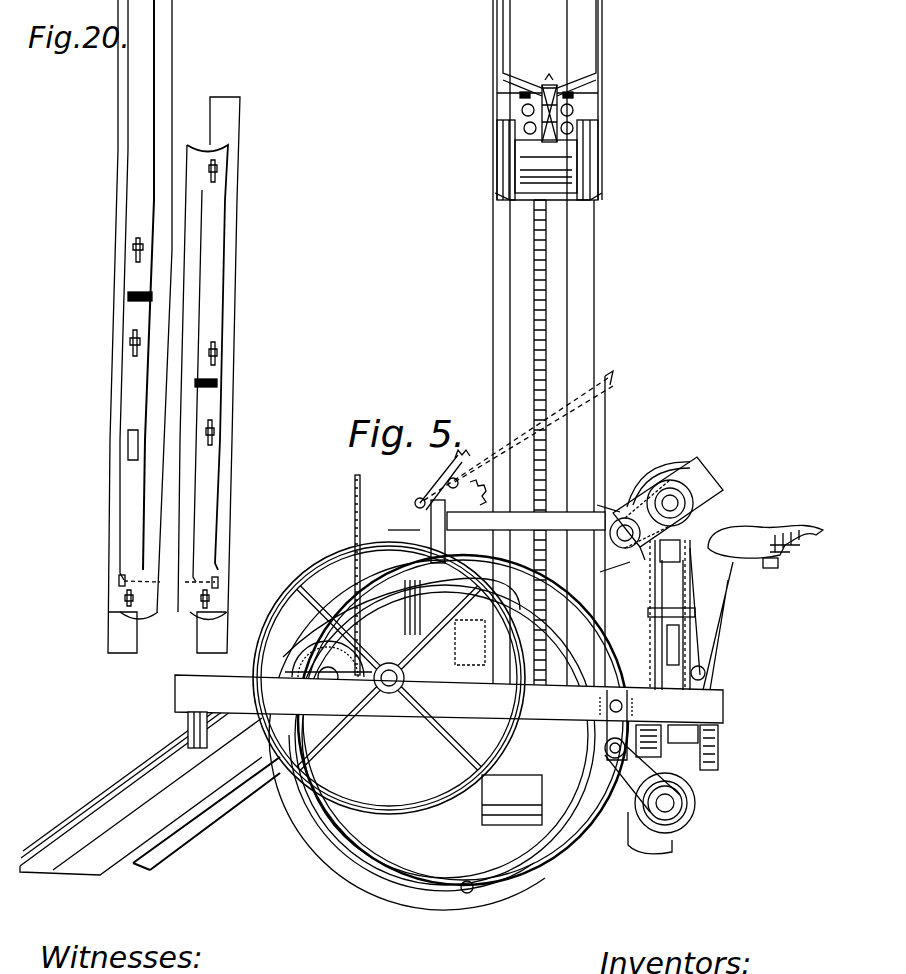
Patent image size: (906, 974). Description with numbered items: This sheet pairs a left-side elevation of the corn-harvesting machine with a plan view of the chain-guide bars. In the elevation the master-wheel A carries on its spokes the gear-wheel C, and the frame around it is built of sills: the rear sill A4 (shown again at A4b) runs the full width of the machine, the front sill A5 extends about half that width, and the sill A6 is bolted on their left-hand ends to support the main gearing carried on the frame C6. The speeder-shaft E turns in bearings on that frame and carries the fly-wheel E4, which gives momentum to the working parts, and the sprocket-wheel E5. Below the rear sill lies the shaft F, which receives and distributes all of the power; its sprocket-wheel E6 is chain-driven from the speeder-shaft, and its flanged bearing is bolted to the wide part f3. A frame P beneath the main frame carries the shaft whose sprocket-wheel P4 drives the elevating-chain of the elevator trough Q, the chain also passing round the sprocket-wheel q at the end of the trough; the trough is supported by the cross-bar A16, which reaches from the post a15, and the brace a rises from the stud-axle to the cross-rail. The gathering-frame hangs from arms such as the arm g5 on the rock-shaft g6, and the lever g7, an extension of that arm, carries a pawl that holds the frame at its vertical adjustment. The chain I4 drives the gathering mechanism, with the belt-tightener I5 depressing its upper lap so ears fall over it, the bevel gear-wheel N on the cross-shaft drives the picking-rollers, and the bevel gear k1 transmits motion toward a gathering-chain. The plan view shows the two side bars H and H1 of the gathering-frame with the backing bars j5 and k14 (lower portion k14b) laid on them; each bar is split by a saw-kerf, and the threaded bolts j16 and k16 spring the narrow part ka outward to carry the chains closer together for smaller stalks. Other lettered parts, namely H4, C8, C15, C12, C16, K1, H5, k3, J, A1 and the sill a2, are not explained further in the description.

In FIG. 20, the side bar H1 is at (140, 326).
In FIG. 20, the chain-backing bar k14 is at (138, 199).
In FIG. 20, the narrow part of bar ka is at (160, 197).
In FIG. 20, the threaded bolt k16 is at (128, 296).
In FIG. 20, the pin k14 lower k14b is at (140, 440).
In FIG. 20, the left-hand bar H is at (200, 124).
In FIG. 20, the flat bar j5 is at (200, 225).
In FIG. 20, the threaded bolt j16 is at (217, 383).
In FIG. 5, the elevator trough Q is at (553, 345).
In FIG. 5, the sprocket-wheel q is at (553, 82).
In FIG. 5, the belt-tightener I5 is at (521, 530).
In FIG. 5, the shaft F is at (672, 806).
In FIG. 5, the cross-bar A16 is at (526, 521).
In FIG. 5, the graduated post H4 is at (360, 503).
In FIG. 5, the arm g5 is at (415, 500).
In FIG. 5, the lever g7 is at (455, 458).
In FIG. 5, the rock-shaft g6 is at (477, 493).
In FIG. 5, the sill A4 is at (394, 520).
In FIG. 5, the gear-wheel C is at (401, 617).
In FIG. 5, the sprocket-wheel E5 is at (401, 617).
In FIG. 5, the gear C8 is at (328, 664).
In FIG. 5, the master-wheel A is at (449, 764).
In FIG. 5, the sill A6 is at (583, 703).
In FIG. 5, the frame C6 is at (232, 697).
In FIG. 5, the part C15 is at (278, 691).
In FIG. 5, the part C12 is at (346, 691).
In FIG. 5, the part C16 is at (428, 691).
In FIG. 5, the sill A5 is at (188, 724).
In FIG. 5, the rails K' K1 is at (150, 787).
In FIG. 5, the speeder-shaft E is at (389, 678).
In FIG. 5, the fly-wheel E4 is at (389, 683).
In FIG. 5, the sprocket-wheel P4 is at (512, 800).
In FIG. 5, the bevel gear k1 is at (470, 642).
In FIG. 5, the bevel gear-wheel N is at (651, 505).
In FIG. 5, the plate H H5 is at (705, 468).
In FIG. 5, the post a15 is at (603, 502).
In FIG. 5, the chain I4 is at (615, 573).
In FIG. 5, the sill a2 is at (680, 555).
In FIG. 5, the wide part f3 is at (648, 612).
In FIG. 5, the brace a is at (679, 640).
In FIG. 5, the sprocket-wheel E6 is at (650, 761).
In FIG. 5, the frame P is at (620, 832).
In FIG. 5, the block k3 is at (677, 747).
In FIG. 5, the frame A4 A4b is at (718, 750).
In FIG. 5, the part J is at (400, 607).
In FIG. 5, the frame A A1 is at (392, 569).